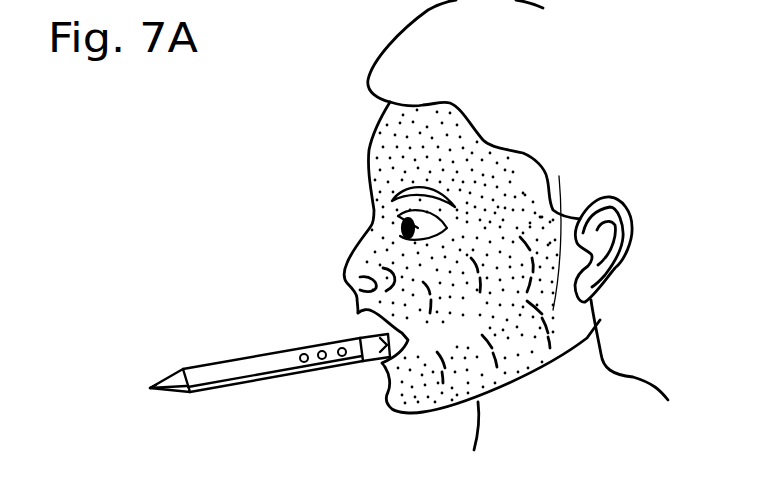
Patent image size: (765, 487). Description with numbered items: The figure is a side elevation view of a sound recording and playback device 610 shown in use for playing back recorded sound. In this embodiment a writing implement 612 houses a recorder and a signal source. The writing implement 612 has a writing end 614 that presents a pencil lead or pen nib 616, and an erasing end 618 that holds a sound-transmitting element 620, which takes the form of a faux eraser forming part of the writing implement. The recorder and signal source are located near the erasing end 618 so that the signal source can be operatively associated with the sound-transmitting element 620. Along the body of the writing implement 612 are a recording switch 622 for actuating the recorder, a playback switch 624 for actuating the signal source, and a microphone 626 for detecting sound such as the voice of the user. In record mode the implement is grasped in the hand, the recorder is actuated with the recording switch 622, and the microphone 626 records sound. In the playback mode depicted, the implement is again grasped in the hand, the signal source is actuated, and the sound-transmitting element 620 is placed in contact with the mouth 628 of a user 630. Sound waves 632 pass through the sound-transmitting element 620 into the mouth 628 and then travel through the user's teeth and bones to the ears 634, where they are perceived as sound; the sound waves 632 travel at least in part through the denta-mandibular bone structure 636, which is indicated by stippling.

The device 610 is at (191, 306).
The writing implement 612 is at (243, 385).
The writing end 614 is at (163, 372).
The pencil lead or pen nib 616 is at (149, 388).
The erasing end 618 is at (351, 375).
The sound-transmitting element 620 is at (356, 338).
The recording switch 622 is at (300, 354).
The playback switch 624 is at (322, 359).
The microphone 626 is at (341, 348).
The mouth 628 is at (373, 364).
The user 630 is at (352, 110).
The sound waves 632 is at (428, 297).
The ears 634 is at (622, 230).
The denta-mandibular bone structure 636 is at (500, 192).